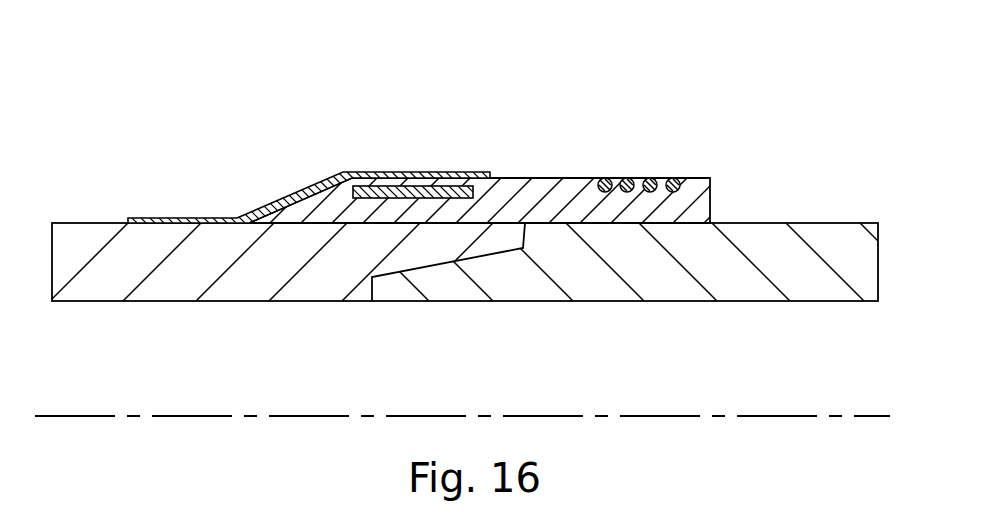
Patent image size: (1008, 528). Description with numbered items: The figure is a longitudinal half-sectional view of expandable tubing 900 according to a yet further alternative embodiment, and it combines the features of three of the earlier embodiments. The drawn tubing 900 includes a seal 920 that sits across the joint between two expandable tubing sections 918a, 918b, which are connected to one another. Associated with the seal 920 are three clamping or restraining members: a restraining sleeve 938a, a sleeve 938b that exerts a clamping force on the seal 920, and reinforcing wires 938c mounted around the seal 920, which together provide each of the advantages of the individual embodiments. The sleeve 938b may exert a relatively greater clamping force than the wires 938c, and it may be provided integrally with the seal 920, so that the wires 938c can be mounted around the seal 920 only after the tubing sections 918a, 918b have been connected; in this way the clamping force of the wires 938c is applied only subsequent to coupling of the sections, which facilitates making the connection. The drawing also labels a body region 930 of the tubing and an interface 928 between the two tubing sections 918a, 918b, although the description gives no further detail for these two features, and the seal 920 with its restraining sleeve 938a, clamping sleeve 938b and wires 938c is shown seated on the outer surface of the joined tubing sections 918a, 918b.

The expandable tubing 900 is at (742, 94).
The seal 920 is at (524, 122).
The substrate 930 is at (307, 293).
The expandable tubing section 918a is at (700, 292).
The expandable tubing section 918b is at (147, 293).
The interface between substrate portions 928 is at (540, 282).
The restraining sleeve 938a is at (303, 190).
The sleeve 938b is at (414, 190).
The reinforcing wires 938c is at (672, 178).